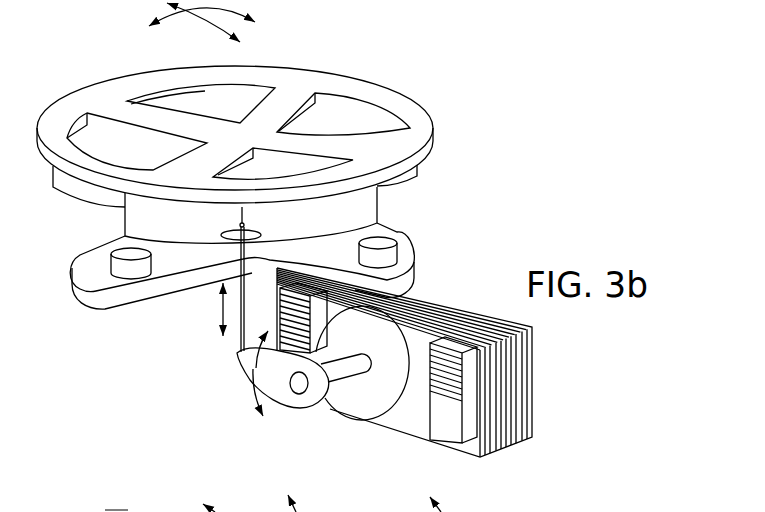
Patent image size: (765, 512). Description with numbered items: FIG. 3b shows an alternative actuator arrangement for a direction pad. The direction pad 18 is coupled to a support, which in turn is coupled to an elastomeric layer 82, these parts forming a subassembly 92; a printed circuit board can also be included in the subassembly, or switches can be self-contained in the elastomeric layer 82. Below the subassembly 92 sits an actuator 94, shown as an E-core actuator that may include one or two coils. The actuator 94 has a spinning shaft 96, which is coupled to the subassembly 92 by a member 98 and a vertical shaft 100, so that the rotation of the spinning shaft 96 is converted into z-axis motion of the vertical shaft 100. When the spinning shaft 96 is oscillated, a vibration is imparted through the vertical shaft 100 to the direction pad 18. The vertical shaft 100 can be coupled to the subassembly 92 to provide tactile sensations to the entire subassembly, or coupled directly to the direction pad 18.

The subassembly 92 is at (406, 88).
The direction pad 18 is at (420, 128).
The elastomeric layer 82 is at (404, 242).
The actuator 94 is at (540, 375).
The spinning shaft 96 is at (347, 372).
The member 98 is at (296, 402).
The vertical shaft 100 is at (238, 349).